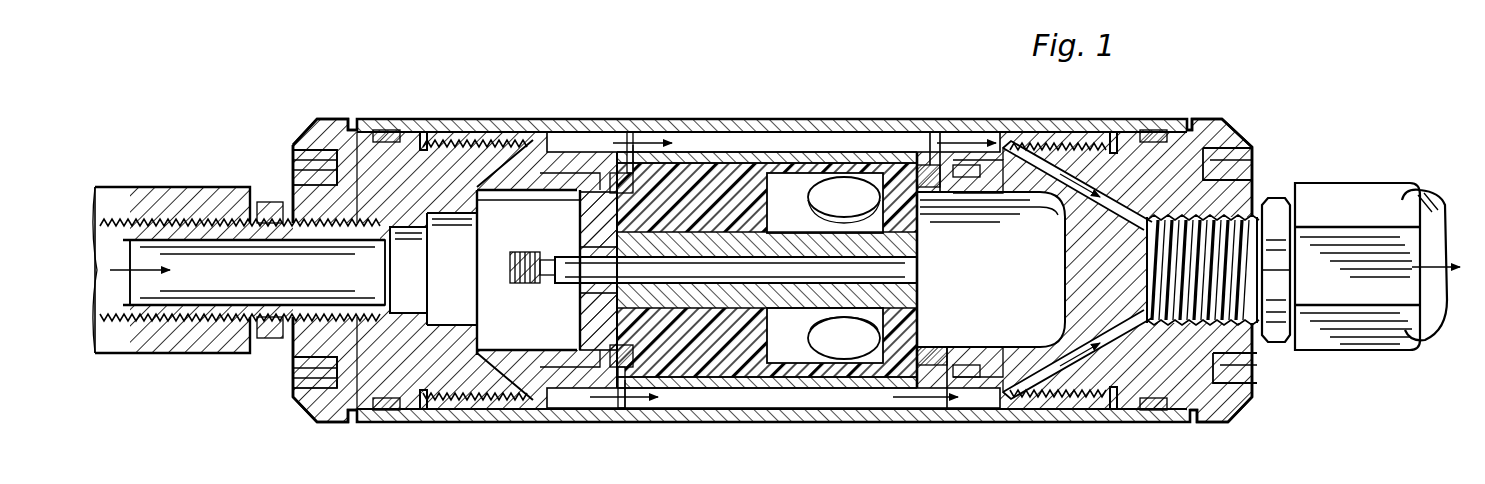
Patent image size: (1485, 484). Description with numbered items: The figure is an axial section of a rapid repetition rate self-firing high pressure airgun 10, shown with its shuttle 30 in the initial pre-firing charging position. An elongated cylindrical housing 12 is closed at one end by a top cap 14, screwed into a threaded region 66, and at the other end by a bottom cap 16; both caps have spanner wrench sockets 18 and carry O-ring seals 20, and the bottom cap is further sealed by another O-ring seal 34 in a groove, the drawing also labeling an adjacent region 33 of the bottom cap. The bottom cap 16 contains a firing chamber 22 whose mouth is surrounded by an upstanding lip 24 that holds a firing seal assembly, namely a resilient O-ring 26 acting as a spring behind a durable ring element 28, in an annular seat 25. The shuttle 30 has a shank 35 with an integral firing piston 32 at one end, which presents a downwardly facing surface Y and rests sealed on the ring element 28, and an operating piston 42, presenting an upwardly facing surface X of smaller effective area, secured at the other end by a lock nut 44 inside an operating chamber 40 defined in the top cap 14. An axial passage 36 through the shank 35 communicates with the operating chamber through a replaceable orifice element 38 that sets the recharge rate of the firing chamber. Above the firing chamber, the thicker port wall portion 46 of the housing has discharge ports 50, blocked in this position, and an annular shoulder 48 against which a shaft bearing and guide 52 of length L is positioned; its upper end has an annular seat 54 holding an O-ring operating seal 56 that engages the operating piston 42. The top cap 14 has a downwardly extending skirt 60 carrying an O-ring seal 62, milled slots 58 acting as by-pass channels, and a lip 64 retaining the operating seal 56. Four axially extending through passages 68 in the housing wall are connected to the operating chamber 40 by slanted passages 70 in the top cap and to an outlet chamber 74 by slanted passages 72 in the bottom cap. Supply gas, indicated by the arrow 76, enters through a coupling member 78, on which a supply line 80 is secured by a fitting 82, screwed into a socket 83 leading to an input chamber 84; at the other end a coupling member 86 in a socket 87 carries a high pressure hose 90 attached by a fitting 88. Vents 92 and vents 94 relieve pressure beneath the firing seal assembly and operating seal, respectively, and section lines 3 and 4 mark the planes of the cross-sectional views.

The airgun 10 is at (793, 55).
The cylindrical housing 12 is at (760, 122).
The top cap 14 is at (303, 132).
The bottom cap 16 is at (1230, 148).
The spanner wrench sockets 18 is at (293, 170).
The O-ring seals 20 is at (388, 130).
The firing chamber 22 is at (1040, 280).
The lip 24 is at (953, 345).
The annular seat 25 is at (1000, 229).
The O-ring 26 is at (928, 170).
The ring element 28 is at (922, 362).
The shuttle 30 is at (792, 313).
The firing piston 32 is at (910, 320).
The body shoulder 33 is at (1082, 133).
The O-ring seal 34 is at (973, 177).
The shank 35 is at (793, 233).
The axial passage 36 is at (923, 264).
The orifice element 38 is at (513, 267).
The operating chamber 40 is at (447, 378).
The operating piston 42 is at (553, 393).
The lock nut 44 is at (527, 222).
The port wall portion 46 is at (833, 390).
The annular shoulder 48 is at (753, 160).
The discharge ports 50 is at (853, 180).
The shaft bearing and guide 52 is at (753, 165).
The annular seat 54 is at (700, 162).
The operating seal 56 is at (627, 380).
The milled slots 58 is at (558, 168).
The skirt 60 is at (633, 180).
The O-ring seal 62 is at (582, 162).
The lip 64 is at (607, 397).
The threaded region 66 is at (500, 152).
The through passages 68 is at (800, 140).
The slanted passages 70 is at (505, 158).
The slanted passages 72 is at (1070, 142).
The outlet chamber 74 is at (1082, 252).
The arrow 76 is at (143, 275).
The coupling member 78 is at (270, 342).
The supply line 80 is at (113, 323).
The fitting 82 is at (157, 188).
The socket 83 is at (313, 213).
The input chamber 84 is at (402, 272).
The coupling member 86 is at (1277, 200).
The socket 87 is at (1222, 327).
The fitting 88 is at (1365, 184).
The high pressure hose 90 is at (1432, 210).
The vents 92 is at (937, 170).
The vents 94 is at (636, 168).
The section line 3- 3 is at (573, 60).
The section line 4- 4 is at (843, 60).
The surface X is at (477, 338).
The surface Y is at (920, 298).
The length L is at (765, 323).